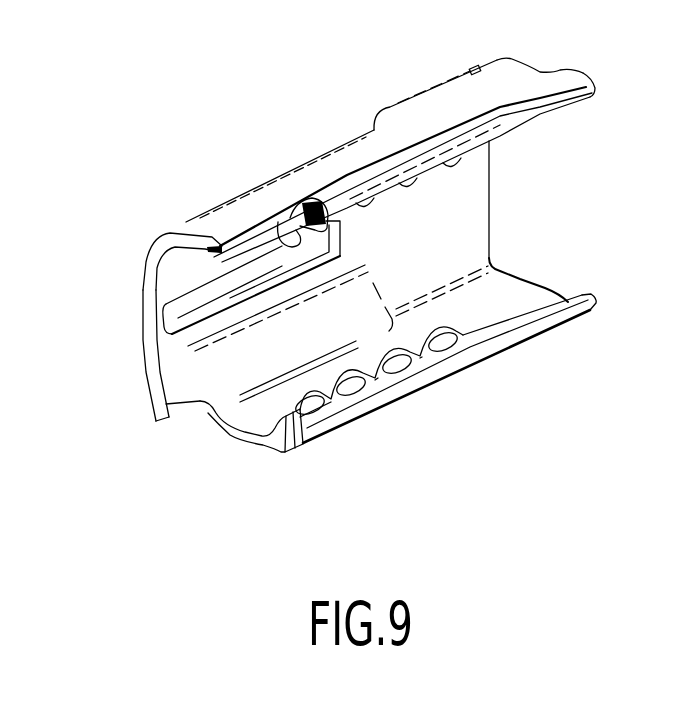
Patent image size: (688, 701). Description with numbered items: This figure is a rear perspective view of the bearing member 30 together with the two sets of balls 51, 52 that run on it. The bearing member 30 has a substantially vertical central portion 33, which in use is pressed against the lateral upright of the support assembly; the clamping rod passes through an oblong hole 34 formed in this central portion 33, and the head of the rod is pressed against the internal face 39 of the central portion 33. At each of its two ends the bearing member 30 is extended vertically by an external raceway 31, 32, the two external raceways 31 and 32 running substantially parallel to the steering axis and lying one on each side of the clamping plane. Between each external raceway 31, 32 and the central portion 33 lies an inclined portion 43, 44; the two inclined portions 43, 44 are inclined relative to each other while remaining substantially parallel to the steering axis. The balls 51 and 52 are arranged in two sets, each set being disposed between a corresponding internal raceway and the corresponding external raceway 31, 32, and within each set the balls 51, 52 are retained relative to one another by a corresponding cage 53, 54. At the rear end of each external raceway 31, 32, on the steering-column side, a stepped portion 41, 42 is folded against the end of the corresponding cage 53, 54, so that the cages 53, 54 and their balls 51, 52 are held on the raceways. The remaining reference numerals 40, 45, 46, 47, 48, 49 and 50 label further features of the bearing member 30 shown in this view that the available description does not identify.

The bearing member 30 is at (216, 190).
The external raceway 31 is at (550, 117).
The external raceway 32 is at (507, 332).
The central portion 33 is at (490, 182).
The oblong hole 34 is at (186, 314).
The internal face 39 is at (447, 230).
The clip 40 is at (143, 307).
The stepped portion 41 is at (280, 221).
The stepped portion 42 is at (299, 447).
The inclined portion 43 is at (152, 248).
The inclined portion 44 is at (153, 409).
The upturned lip 45 is at (440, 108).
The bent leg 46 is at (240, 431).
The hook tip 47 is at (192, 244).
The web bottom edge 48 is at (176, 396).
The curved hook portion 49 is at (148, 258).
The clip leg 50 is at (146, 392).
The balls 51 is at (410, 183).
The balls 52 is at (378, 398).
The cage 53 is at (308, 222).
The cage 54 is at (437, 358).